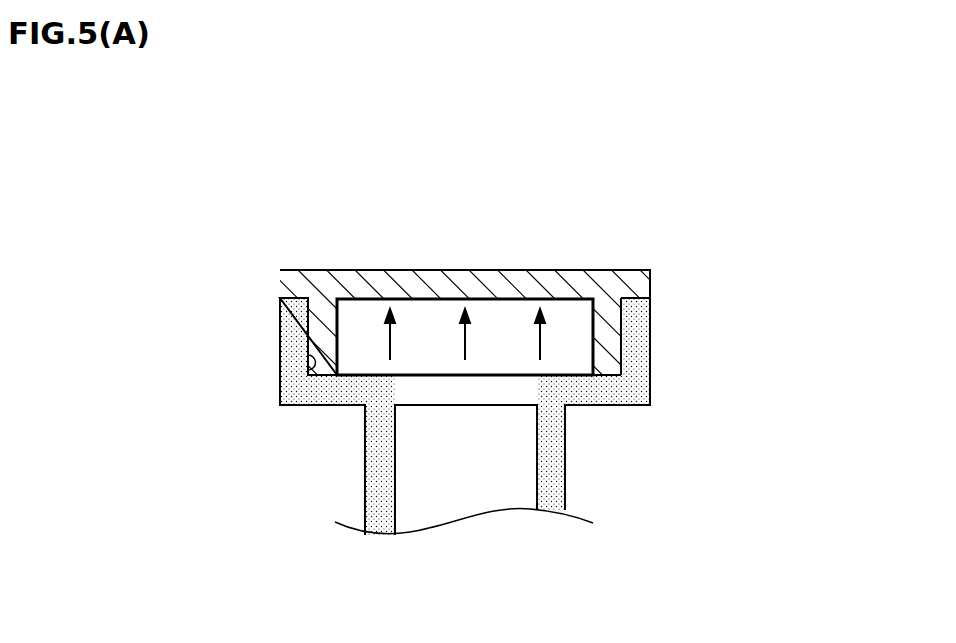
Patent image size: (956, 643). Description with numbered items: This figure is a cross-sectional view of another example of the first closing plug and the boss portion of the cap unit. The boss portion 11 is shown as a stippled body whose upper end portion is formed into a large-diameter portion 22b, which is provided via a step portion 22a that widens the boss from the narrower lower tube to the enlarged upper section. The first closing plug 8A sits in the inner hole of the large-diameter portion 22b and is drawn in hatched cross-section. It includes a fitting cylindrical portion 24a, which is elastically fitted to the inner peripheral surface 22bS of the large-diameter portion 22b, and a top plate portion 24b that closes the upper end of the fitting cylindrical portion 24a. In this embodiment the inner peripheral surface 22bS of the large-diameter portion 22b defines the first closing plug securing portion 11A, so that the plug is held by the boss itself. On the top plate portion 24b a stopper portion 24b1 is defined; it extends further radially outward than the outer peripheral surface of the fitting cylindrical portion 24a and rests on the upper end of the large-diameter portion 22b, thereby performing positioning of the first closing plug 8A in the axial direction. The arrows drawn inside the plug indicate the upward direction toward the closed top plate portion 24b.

The first closing plug 8A is at (347, 179).
The fitting cylindrical portion 24a is at (353, 299).
The top plate portion 24b is at (472, 270).
The stopper portion 24b1 is at (638, 285).
The large-diameter portion 22b is at (280, 316).
The first closing plug securing portion 11A is at (310, 366).
The inner peripheral surface 22bS is at (312, 362).
The step portion 22a is at (310, 406).
The boss portion 11 is at (566, 462).